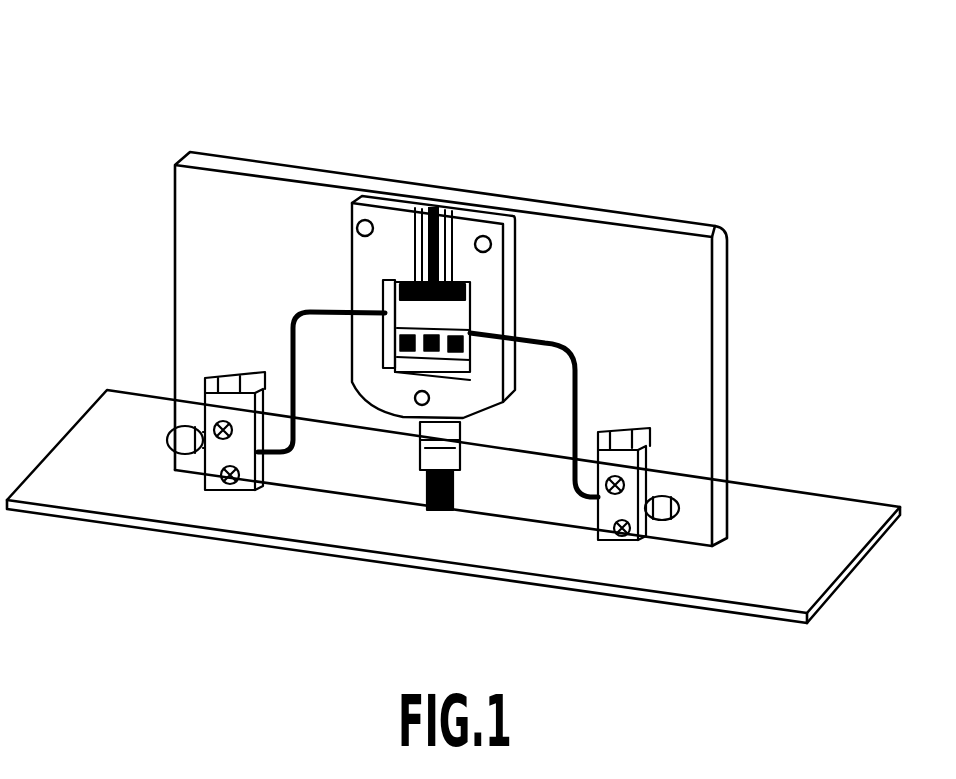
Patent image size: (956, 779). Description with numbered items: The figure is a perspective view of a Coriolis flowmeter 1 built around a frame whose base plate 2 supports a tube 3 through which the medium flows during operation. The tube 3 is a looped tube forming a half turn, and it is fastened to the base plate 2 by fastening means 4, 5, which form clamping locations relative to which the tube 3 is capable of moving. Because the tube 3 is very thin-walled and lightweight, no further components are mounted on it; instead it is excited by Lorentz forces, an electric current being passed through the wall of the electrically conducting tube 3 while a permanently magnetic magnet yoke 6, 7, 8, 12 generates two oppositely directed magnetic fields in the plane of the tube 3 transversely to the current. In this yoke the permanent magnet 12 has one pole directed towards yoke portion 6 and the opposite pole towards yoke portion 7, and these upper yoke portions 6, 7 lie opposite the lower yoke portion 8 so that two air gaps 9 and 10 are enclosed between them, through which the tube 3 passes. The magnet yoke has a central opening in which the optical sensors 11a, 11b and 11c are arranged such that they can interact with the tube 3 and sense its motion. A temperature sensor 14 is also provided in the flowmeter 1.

The Coriolis flowmeter 1 is at (607, 163).
The base plate 2 is at (200, 208).
The tube 3 is at (563, 343).
The fastening means 4 is at (225, 455).
The fastening means 5 is at (608, 500).
The yoke portion 6 is at (462, 233).
The yoke portion 7 is at (398, 228).
The lower yoke portion 8 is at (367, 368).
The air gap 9 is at (310, 305).
The air gap 10 is at (527, 343).
The optical sensor 11a is at (398, 358).
The optical sensor 11b is at (418, 360).
The optical sensor 11c is at (455, 365).
The permanent magnet 12 is at (425, 228).
The temperature sensor 14 is at (438, 432).